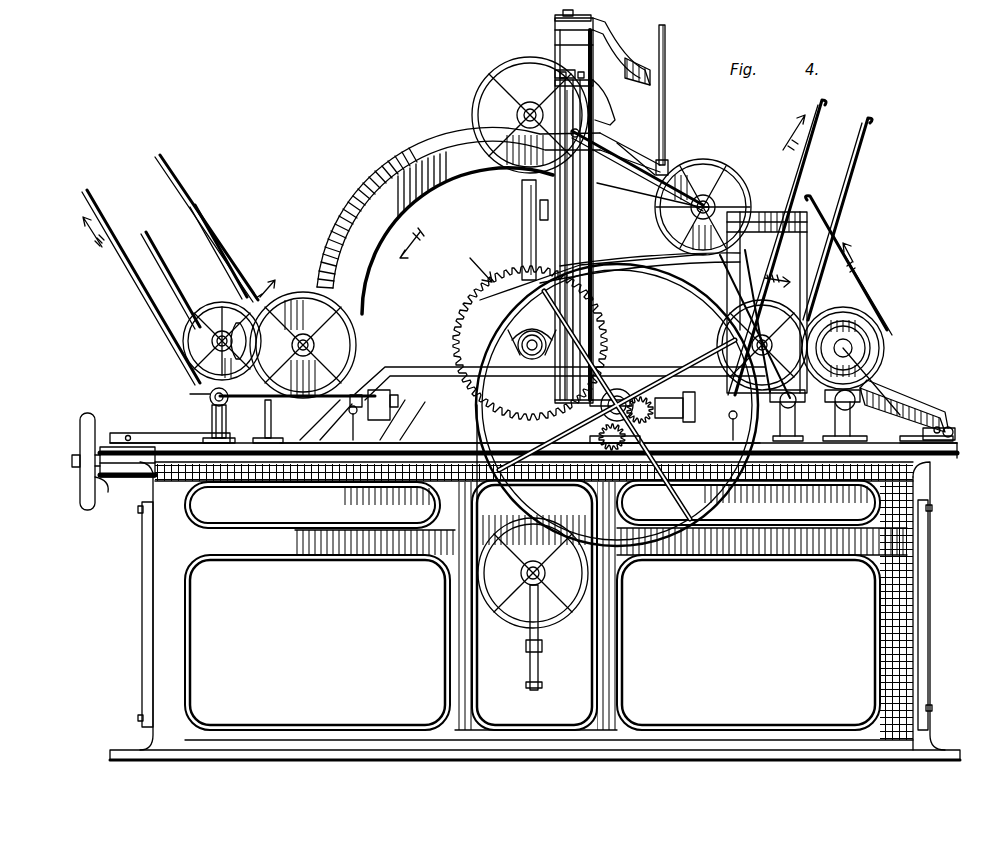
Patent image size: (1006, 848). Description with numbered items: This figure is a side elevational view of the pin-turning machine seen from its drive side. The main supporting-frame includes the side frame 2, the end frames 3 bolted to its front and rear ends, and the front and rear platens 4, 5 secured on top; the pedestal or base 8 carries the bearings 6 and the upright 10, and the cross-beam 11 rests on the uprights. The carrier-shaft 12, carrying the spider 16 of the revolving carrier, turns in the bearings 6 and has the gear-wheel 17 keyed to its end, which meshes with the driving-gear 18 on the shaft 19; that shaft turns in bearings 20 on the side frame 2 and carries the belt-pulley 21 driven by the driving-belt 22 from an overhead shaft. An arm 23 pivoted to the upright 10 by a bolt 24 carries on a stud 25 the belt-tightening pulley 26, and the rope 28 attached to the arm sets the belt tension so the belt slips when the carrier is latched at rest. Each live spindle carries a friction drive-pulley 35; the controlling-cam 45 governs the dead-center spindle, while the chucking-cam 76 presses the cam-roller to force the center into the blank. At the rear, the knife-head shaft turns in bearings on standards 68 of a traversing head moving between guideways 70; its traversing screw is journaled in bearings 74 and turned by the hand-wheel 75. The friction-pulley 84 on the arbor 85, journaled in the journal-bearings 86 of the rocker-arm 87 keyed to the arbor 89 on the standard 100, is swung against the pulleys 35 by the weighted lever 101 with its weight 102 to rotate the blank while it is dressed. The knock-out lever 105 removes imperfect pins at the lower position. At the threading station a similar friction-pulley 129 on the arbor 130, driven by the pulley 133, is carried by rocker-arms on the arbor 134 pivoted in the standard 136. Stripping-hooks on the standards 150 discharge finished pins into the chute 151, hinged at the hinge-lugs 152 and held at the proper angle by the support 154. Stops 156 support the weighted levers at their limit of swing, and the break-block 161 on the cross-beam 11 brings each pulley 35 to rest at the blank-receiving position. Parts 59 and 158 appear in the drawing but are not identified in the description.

The side frame 2 is at (724, 545).
The end frame 3 is at (142, 550).
The front platen 4 is at (917, 447).
The rear platen 5 is at (145, 447).
The bearings 6 is at (532, 331).
The pedestal or base 8 is at (430, 375).
The upright 10 is at (586, 230).
The cross-beam 11 is at (572, 67).
The carrier-shaft 12 is at (525, 347).
The spider 16 is at (385, 228).
The gear-wheel 17 is at (490, 295).
The driving-gear 18 is at (638, 415).
The shaft 19 is at (606, 408).
The bearings 20 is at (615, 448).
The belt-pulley 21 is at (720, 495).
The driving-belt 22 is at (858, 160).
The arm 23 is at (648, 192).
The bolt 24 is at (637, 170).
The stud 25 is at (686, 213).
The belt-tightening pulley 26 is at (715, 168).
The rope 28 is at (666, 30).
The friction drive-pulley 35 is at (355, 322).
The controlling-cam 45 is at (628, 140).
The bracket 59 is at (615, 118).
The standards 68 is at (263, 421).
The guideways 70 is at (140, 434).
The bearings 74 is at (105, 480).
The hand-wheel 75 is at (80, 432).
The chucking-cam 76 is at (358, 205).
The friction-pulley 84 is at (195, 325).
The arbor 85 is at (211, 346).
The journal-bearings 86 is at (216, 330).
The rocker-arm 87 is at (220, 365).
The arbor 89 is at (215, 390).
The standard 100 is at (210, 421).
The weighted lever 101 is at (210, 400).
The weight 102 is at (385, 412).
The knock-out lever 105 is at (530, 648).
The friction-pulley 129 is at (883, 338).
The arbor 130 is at (855, 350).
The pulley 133 is at (884, 330).
The arbor 134 is at (880, 390).
The standard 136 is at (908, 405).
The standards 150 is at (806, 245).
The chute 151 is at (942, 422).
The hinge-lugs 152 is at (955, 434).
The support or rest 154 is at (921, 433).
The supporting pins or stops 156 is at (537, 429).
The plate 158 is at (638, 432).
The break-block 161 is at (636, 80).